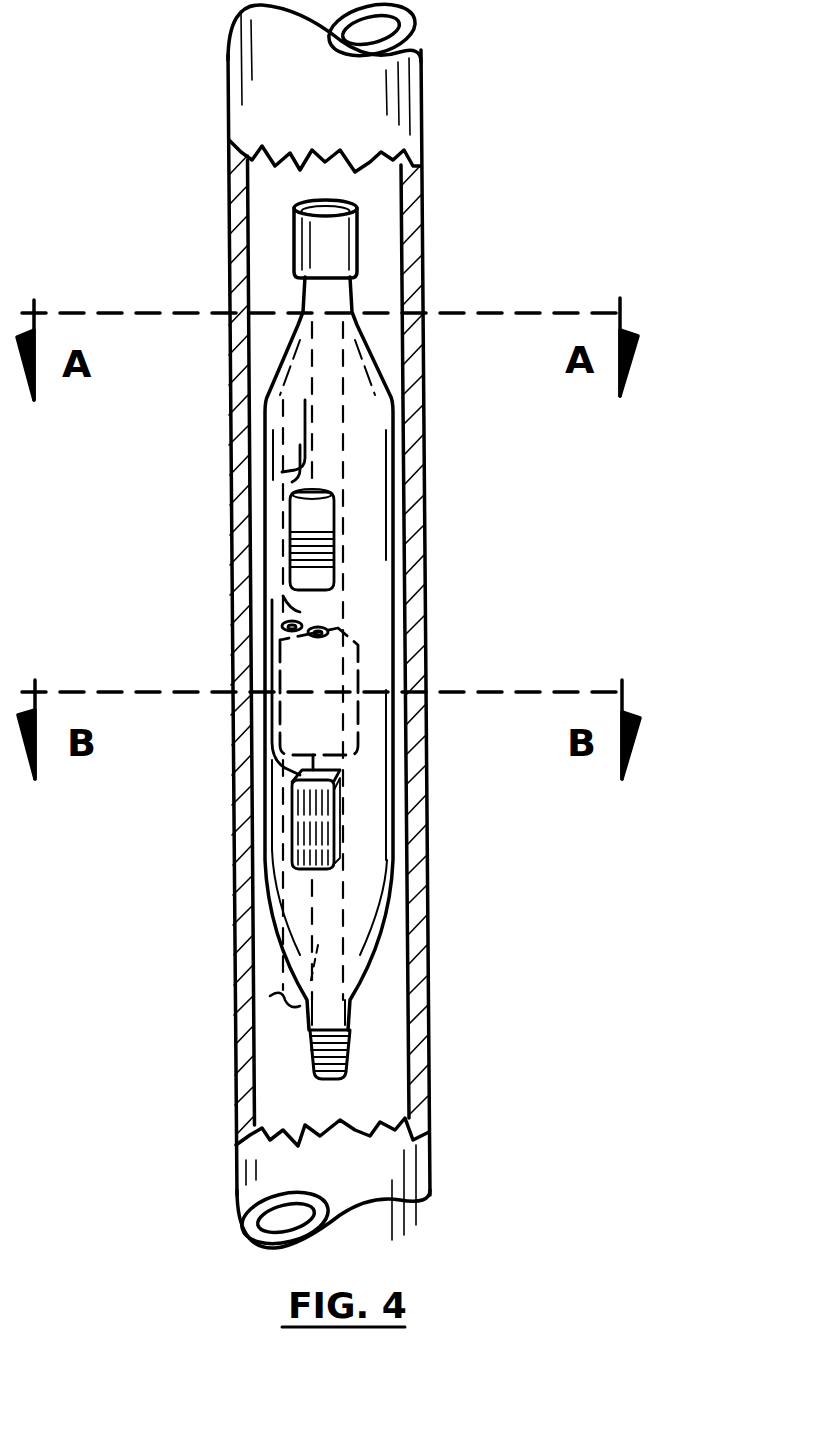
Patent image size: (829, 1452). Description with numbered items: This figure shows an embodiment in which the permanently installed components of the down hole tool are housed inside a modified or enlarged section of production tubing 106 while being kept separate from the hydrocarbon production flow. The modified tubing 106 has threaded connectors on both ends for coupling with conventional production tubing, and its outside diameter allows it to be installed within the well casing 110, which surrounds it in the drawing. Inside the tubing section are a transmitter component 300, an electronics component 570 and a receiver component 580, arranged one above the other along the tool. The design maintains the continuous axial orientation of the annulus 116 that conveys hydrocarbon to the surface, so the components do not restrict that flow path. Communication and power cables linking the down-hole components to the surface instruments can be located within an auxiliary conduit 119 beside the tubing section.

The production tubing 106 is at (385, 912).
The well casing 110 is at (425, 493).
The production tubing annulus 116 is at (345, 962).
The auxiliary conduit 119 is at (280, 1012).
The transmitter component 300 is at (290, 524).
The electronics component 570 is at (292, 668).
The receiver component 580 is at (290, 822).